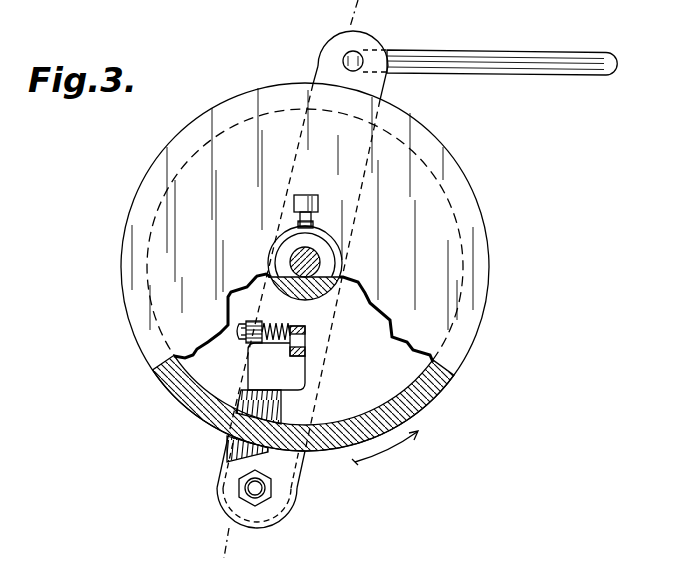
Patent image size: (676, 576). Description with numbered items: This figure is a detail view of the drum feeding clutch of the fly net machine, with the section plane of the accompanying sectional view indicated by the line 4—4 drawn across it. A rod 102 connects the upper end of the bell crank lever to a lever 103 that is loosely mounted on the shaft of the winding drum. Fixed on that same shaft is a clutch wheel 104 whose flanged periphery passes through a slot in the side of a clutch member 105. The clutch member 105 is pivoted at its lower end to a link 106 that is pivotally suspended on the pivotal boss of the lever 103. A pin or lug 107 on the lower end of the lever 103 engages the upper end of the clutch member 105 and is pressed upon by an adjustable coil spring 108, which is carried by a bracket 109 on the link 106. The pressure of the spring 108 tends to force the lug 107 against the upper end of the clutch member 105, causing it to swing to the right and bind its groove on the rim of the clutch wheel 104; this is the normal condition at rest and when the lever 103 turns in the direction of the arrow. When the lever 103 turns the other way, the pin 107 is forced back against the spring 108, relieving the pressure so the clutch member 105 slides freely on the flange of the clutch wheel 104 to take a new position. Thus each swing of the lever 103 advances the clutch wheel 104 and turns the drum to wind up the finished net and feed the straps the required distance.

The rod 102 is at (503, 52).
The lever 103 is at (258, 363).
The clutch wheel 104 is at (460, 193).
The clutch member 105 is at (305, 404).
The link 106 is at (253, 402).
The pin or lug 107 is at (306, 330).
The adjustable coil spring 108 is at (284, 327).
The bracket 109 is at (252, 313).
The line 4— 4 is at (287, 288).